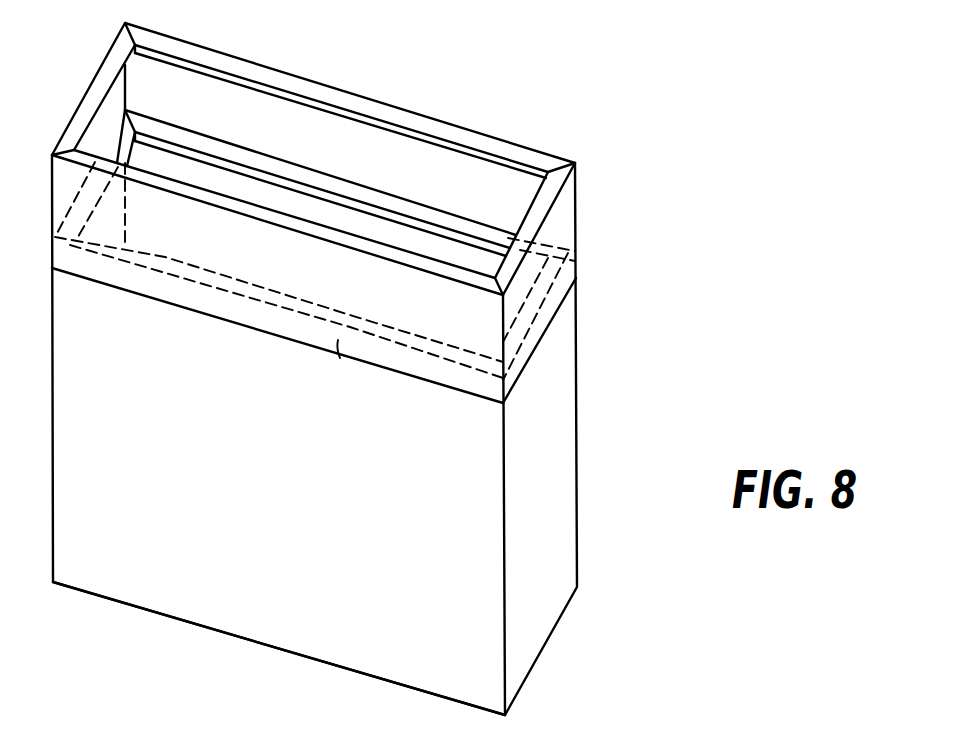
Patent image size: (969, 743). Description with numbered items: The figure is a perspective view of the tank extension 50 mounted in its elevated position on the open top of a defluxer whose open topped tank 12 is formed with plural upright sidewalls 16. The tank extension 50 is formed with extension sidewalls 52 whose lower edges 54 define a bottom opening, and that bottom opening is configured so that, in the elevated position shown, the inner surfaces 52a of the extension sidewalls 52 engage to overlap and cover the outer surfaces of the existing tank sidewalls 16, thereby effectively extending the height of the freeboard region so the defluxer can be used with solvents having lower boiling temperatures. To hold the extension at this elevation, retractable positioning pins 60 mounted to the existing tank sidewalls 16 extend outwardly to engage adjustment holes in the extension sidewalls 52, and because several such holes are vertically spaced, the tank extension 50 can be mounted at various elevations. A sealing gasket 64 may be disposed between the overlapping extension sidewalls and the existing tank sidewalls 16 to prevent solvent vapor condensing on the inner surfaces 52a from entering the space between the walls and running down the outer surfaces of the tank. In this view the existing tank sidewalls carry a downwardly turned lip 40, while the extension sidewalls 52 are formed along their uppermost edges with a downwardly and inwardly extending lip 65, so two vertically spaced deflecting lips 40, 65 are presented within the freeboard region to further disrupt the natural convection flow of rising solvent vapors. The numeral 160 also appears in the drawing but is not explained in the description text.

The tank 12 is at (373, 435).
The upright sidewalls 16 is at (242, 457).
The downwardly turned lip 40 is at (215, 272).
The tank extension 50 is at (382, 159).
The extension sidewalls 52 is at (315, 357).
The inner surfaces of the tank extension sidewalls 52a is at (213, 273).
The lower edges 54 is at (275, 341).
The retractable positioning pins 60 is at (576, 278).
The sealing gasket 64 is at (225, 138).
The downwardly and inwardly extending lip 65 is at (420, 123).
The hidden tab 160 is at (345, 362).